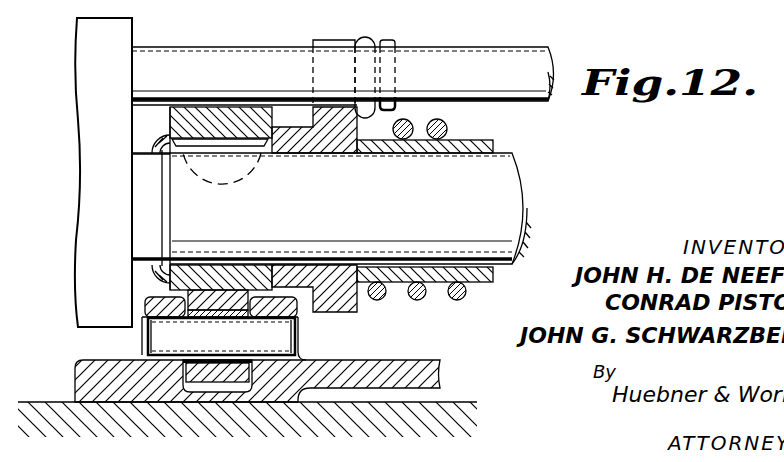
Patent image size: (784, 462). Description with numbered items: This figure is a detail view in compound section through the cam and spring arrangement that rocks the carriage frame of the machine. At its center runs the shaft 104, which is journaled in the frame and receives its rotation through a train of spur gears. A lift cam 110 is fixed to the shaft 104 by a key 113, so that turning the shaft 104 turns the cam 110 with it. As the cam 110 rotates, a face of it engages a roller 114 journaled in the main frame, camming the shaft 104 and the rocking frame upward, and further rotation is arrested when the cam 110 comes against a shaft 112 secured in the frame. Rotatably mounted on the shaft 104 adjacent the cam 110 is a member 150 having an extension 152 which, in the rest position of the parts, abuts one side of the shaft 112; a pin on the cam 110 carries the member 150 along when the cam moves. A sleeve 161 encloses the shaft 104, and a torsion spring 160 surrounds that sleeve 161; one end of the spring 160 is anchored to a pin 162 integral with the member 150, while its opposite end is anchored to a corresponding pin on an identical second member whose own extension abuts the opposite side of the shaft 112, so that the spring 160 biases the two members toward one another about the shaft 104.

The shaft 104 is at (331, 208).
The lift cam 110 is at (200, 117).
The shaft 112 is at (507, 65).
The key 113 is at (223, 150).
The roller 114 is at (197, 376).
The member 150 is at (344, 328).
The extension 152 is at (325, 40).
The torsion spring 160 is at (440, 124).
The sleeve 161 is at (490, 142).
The pin 162 is at (393, 41).